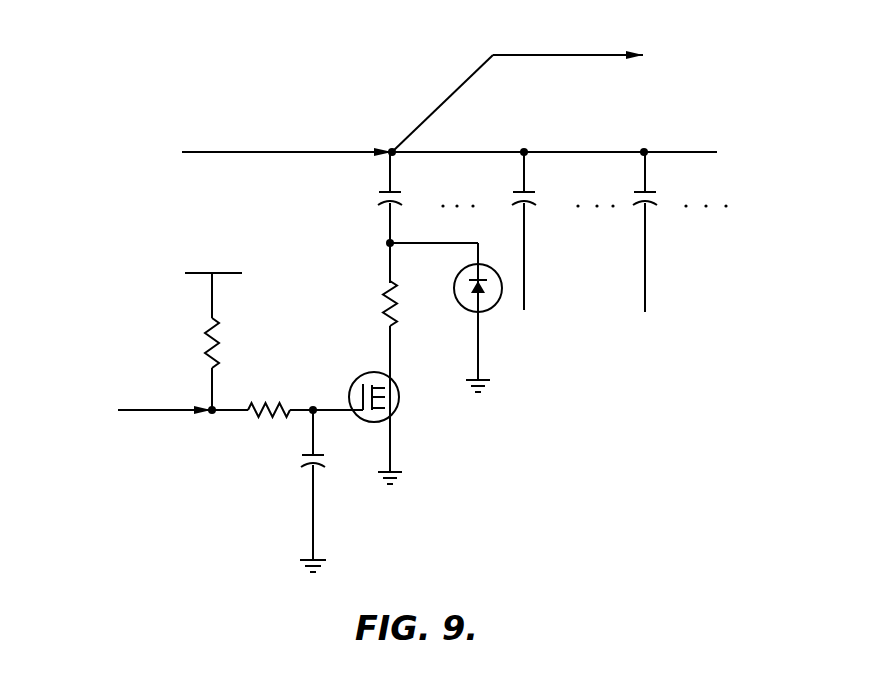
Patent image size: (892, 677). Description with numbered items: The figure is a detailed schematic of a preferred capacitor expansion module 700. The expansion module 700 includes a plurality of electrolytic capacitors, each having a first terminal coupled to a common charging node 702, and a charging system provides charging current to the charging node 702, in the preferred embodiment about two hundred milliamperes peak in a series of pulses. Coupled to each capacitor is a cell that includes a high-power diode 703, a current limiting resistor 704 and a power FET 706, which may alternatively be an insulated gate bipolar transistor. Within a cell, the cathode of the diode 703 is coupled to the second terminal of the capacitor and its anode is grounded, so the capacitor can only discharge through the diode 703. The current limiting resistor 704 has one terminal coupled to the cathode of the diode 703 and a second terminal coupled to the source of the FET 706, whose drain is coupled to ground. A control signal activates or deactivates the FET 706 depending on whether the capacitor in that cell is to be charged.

The expansion module 700 is at (372, 67).
The charging node 702 is at (395, 151).
The high-power diode 703 is at (489, 308).
The current limiting resistor 704 is at (395, 310).
The power FET 706 is at (394, 384).